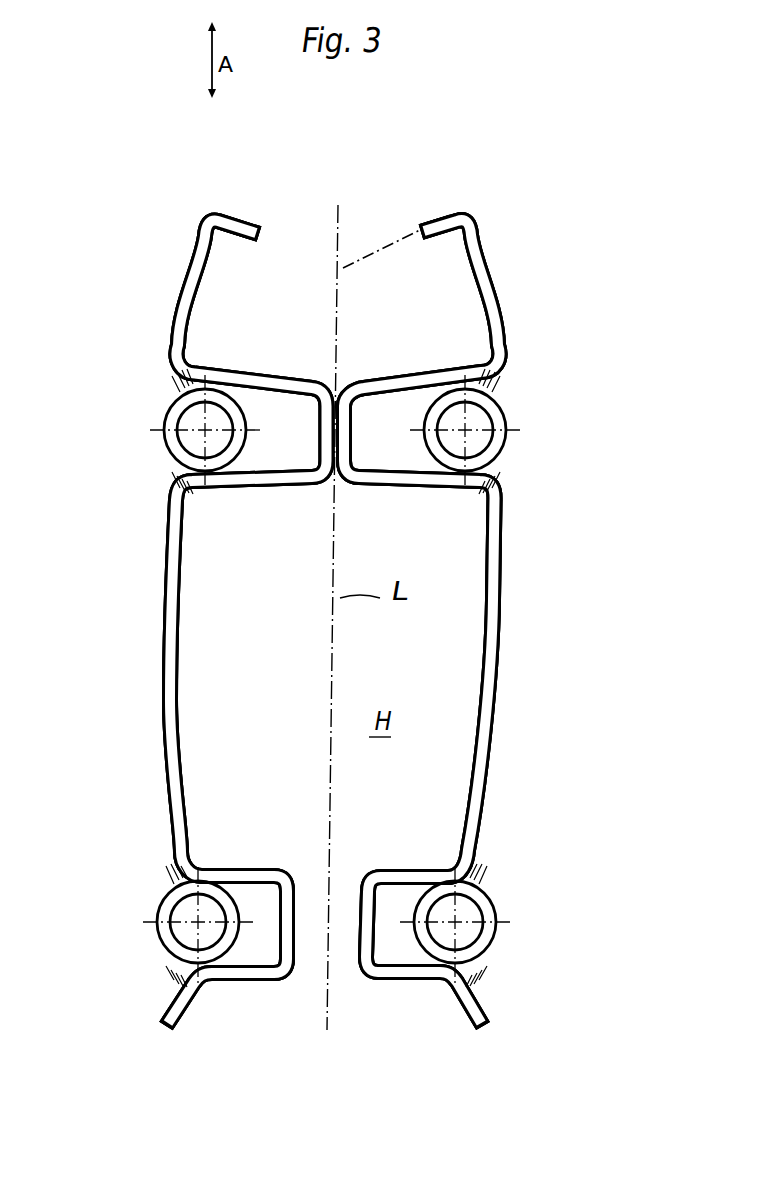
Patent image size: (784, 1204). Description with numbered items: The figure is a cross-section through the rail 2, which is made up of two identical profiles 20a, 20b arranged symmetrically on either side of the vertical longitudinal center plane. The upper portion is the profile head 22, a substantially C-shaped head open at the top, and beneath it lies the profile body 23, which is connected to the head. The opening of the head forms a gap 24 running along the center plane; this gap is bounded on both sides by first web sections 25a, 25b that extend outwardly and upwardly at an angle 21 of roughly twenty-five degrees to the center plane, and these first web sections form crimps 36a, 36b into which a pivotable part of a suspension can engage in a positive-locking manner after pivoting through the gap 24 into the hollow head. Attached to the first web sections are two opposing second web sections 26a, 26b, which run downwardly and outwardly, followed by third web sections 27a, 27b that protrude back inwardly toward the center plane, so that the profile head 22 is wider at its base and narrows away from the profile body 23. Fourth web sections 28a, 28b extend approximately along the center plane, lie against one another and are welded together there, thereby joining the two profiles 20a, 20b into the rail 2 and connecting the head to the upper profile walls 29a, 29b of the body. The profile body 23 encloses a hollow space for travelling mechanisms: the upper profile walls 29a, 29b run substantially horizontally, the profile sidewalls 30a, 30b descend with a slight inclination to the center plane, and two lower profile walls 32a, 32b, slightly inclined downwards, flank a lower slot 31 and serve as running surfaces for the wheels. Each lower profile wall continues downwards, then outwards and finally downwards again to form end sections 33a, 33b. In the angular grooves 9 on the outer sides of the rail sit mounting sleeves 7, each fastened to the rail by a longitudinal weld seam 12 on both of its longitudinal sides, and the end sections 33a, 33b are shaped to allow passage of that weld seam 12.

The rail 2 is at (585, 325).
The sleeve 7 is at (508, 418).
The groove 9 is at (493, 380).
The weld seam 12 is at (492, 870).
The profile 20a is at (486, 722).
The profile 20b is at (170, 722).
The angle 21 is at (352, 258).
The profile head 22 is at (523, 278).
The profile body 23 is at (530, 598).
The gap 24 is at (373, 182).
The first web section 25a is at (432, 212).
The first web section 25b is at (244, 214).
The second web section 26a is at (487, 272).
The second web section 26b is at (192, 266).
The third web section 27a is at (418, 378).
The third web section 27b is at (264, 374).
The fourth web section 28a is at (348, 430).
The fourth web section 28b is at (322, 427).
The upper profile wall 29a is at (405, 485).
The upper profile wall 29b is at (267, 485).
The profile sidewall 30a is at (497, 570).
The profile sidewall 30b is at (176, 657).
The slot 31 is at (345, 974).
The lower profile wall 32a is at (418, 871).
The lower profile wall 32b is at (243, 870).
The end section 33a is at (486, 1010).
The end section 33b is at (176, 1007).
The crimp 36a is at (450, 244).
The crimp 36b is at (228, 244).